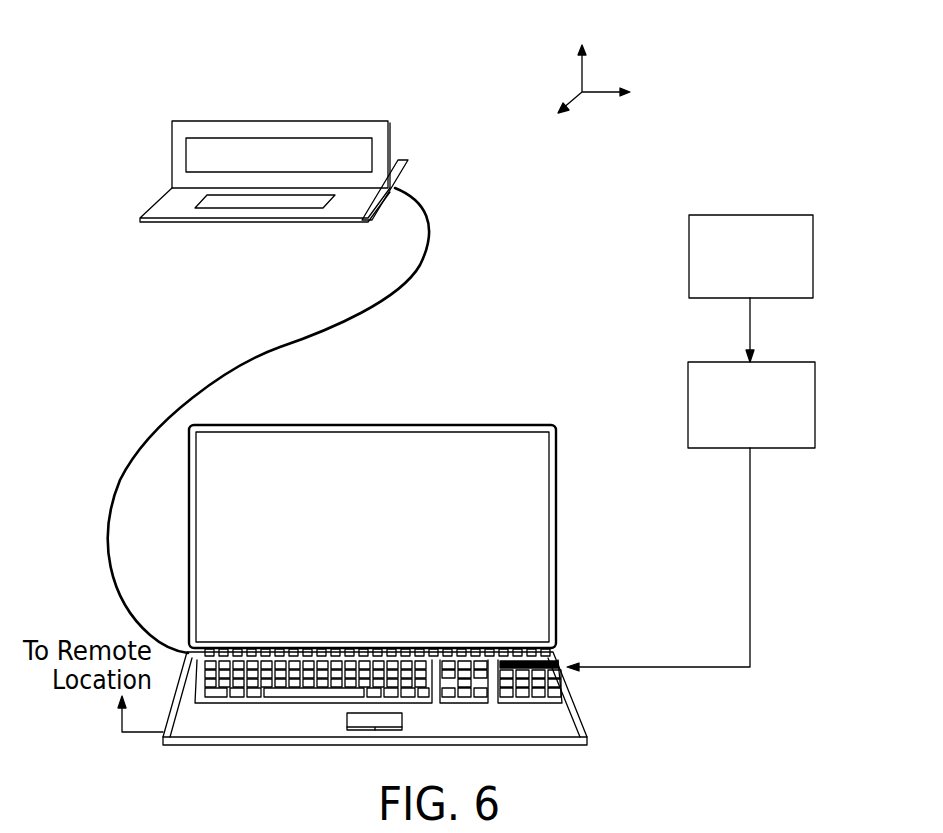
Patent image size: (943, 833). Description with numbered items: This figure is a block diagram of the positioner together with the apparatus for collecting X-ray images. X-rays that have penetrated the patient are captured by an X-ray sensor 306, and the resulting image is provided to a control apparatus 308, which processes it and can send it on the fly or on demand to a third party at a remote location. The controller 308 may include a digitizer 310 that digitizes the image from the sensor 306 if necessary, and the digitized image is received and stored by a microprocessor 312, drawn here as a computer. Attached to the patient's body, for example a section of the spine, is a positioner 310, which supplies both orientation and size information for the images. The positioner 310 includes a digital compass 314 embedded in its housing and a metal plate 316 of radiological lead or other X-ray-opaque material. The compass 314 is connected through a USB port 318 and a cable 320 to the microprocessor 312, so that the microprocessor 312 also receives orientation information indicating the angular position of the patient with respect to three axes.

The X-ray sensor 306 is at (689, 283).
The control apparatus 308 is at (732, 102).
The positioner 310 is at (402, 180).
The microprocessor 312 is at (548, 553).
The digital compass 314 is at (235, 203).
The metal plate 316 is at (230, 152).
The USB port 318 is at (390, 196).
The cable 320 is at (350, 315).